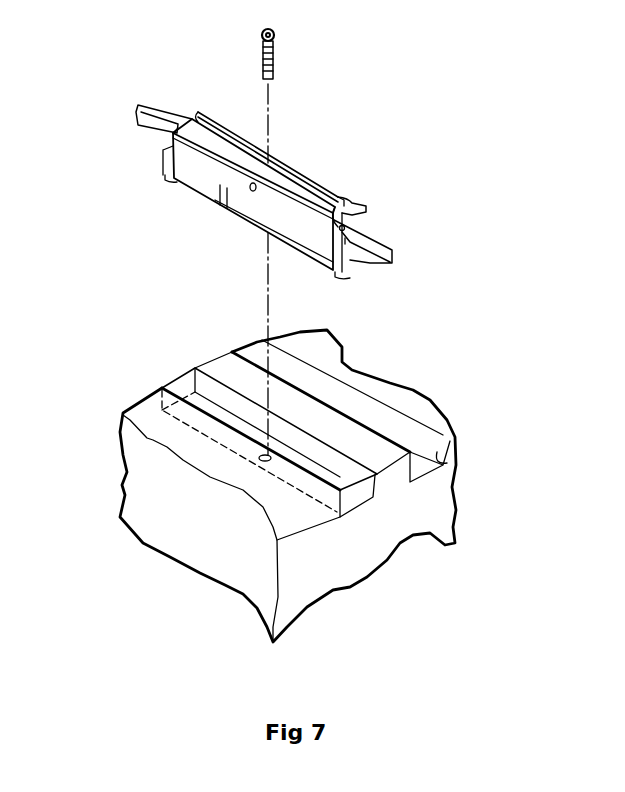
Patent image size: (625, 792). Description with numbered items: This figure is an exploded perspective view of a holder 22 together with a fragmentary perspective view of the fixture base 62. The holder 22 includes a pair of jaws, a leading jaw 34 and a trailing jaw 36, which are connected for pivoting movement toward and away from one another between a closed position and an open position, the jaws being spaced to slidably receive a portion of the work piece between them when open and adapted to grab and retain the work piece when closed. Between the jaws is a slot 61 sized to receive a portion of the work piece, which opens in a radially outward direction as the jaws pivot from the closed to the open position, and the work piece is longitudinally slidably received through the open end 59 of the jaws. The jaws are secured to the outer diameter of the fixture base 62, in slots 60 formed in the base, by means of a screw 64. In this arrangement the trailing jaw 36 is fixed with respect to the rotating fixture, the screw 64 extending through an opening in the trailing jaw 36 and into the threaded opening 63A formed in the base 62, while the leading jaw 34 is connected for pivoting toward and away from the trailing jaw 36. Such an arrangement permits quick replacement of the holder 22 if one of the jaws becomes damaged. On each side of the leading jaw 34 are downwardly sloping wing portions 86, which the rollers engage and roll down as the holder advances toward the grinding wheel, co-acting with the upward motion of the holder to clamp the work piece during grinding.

The holder 22 is at (358, 218).
The leading jaw 34 is at (180, 125).
The trailing jaw 36 is at (300, 163).
The open end 59 is at (348, 214).
The slots 60 is at (194, 378).
The slot 61 is at (334, 178).
The fixture base 62 is at (387, 562).
The threaded opening 63A is at (258, 460).
The screw 64 is at (275, 53).
The wing portions 86 is at (145, 130).